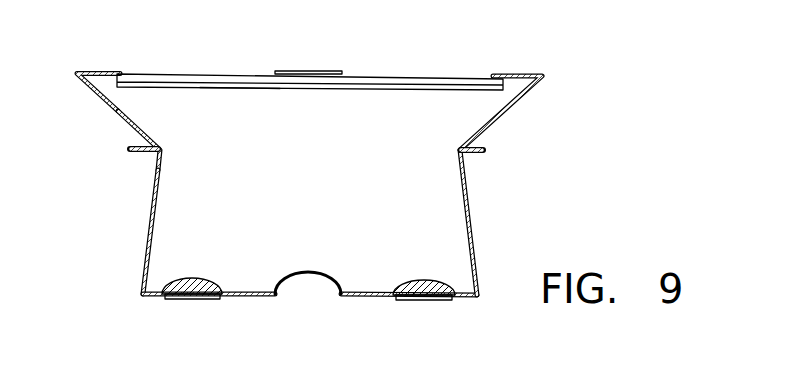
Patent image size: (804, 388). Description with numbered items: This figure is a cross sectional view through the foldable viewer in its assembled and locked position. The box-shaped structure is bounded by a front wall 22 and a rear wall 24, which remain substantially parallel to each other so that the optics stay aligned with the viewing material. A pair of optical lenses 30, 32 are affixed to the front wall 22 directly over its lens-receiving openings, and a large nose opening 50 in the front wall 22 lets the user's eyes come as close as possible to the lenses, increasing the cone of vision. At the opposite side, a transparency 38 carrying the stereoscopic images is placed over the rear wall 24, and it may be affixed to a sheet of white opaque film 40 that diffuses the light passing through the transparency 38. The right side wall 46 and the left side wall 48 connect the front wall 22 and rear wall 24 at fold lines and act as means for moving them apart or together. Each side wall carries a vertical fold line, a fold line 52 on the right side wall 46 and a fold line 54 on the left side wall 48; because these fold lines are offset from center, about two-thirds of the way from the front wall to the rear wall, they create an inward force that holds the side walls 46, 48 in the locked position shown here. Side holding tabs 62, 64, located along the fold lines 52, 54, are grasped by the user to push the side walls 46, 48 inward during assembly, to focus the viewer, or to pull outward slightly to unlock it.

The front wall 22 is at (253, 296).
The rear wall 24 is at (85, 72).
The optical lens 30 is at (185, 296).
The optical lens 32 is at (430, 297).
The transparency 38 is at (242, 88).
The sheet of white opaque film 40 is at (205, 72).
The right side wall 46 is at (470, 232).
The left side wall 48 is at (148, 243).
The nose opening 50 is at (328, 284).
The fold line 52 is at (455, 148).
The fold line 54 is at (157, 155).
The side holding tab 62 is at (470, 153).
The side holding tab 64 is at (140, 147).